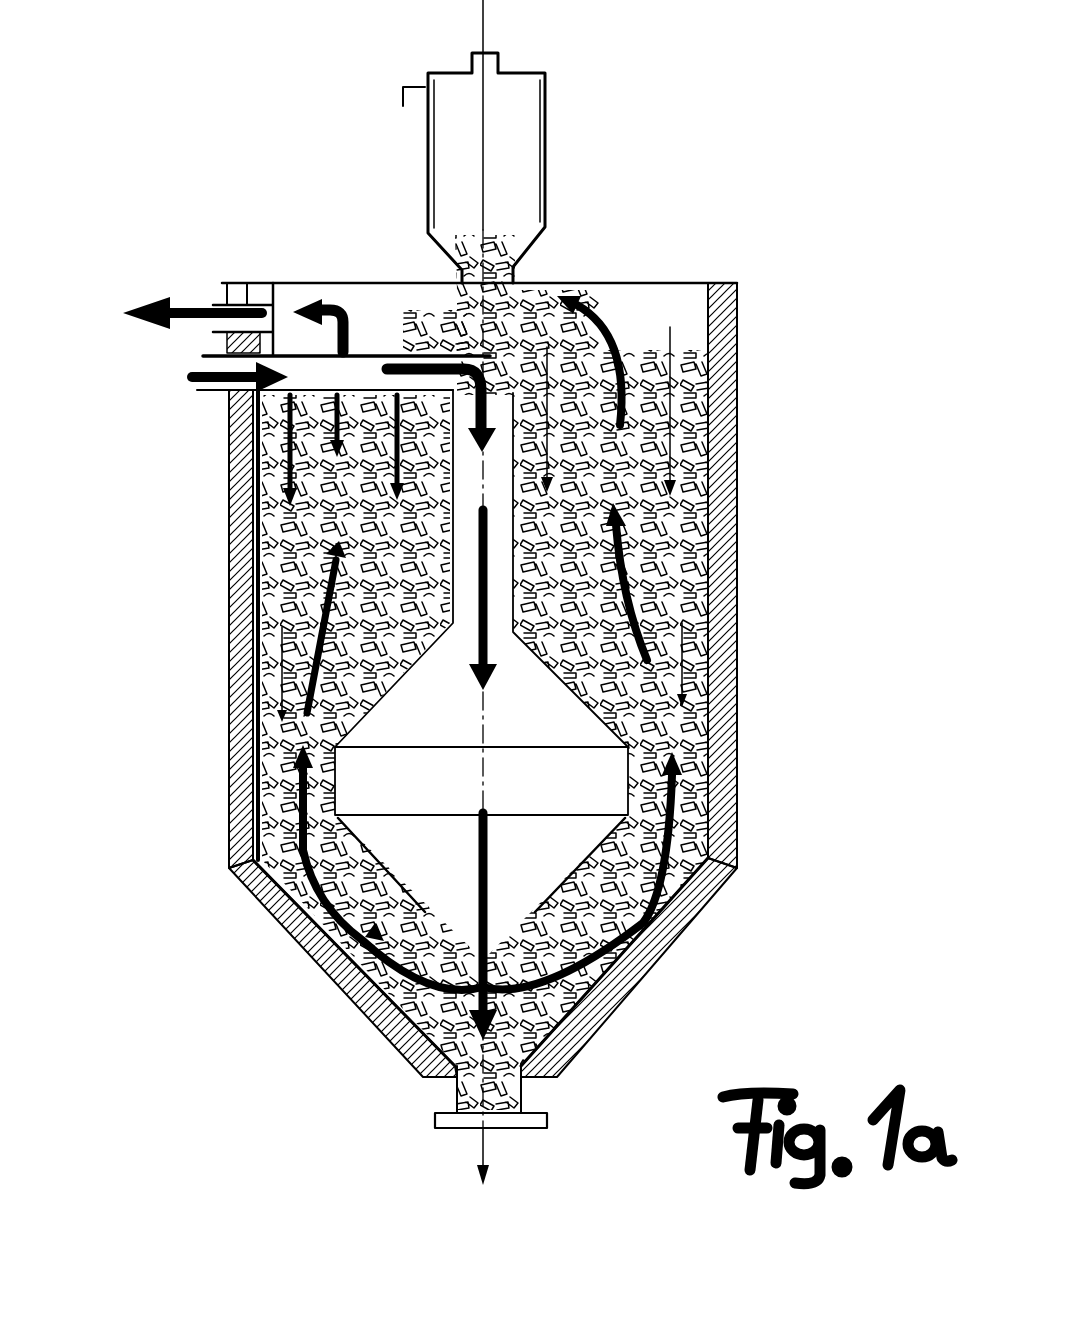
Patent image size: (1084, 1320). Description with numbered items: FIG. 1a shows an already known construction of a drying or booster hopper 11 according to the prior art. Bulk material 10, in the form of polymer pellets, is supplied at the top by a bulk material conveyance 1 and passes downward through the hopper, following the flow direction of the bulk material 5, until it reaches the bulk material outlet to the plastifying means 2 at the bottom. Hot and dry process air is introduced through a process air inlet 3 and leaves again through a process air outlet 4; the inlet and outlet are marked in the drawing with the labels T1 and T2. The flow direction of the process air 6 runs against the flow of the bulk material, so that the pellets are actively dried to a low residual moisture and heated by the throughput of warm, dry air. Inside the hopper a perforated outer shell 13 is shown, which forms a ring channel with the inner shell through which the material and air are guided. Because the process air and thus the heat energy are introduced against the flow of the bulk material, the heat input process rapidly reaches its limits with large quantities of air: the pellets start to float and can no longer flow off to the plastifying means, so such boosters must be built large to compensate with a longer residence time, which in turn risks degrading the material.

The bulk material conveyance 1 is at (513, 200).
The bulk material outlet to the plastifying means 2 is at (458, 1128).
The process air inlet 3 is at (307, 370).
The process air outlet 4 is at (222, 290).
The flow direction of the bulk material 5 is at (667, 366).
The flow direction of the process air 6 is at (640, 580).
The bulk material 10 is at (603, 330).
The drying or booster hopper 11 is at (660, 920).
The perforated outer shell 13 is at (565, 783).
The gas inlet T1 is at (178, 377).
The gas outlet T2 is at (192, 313).